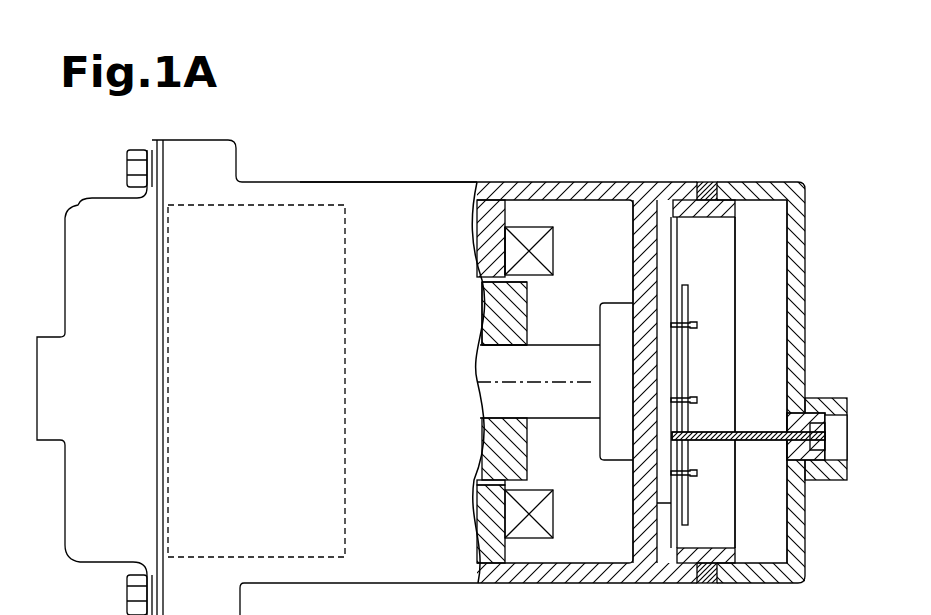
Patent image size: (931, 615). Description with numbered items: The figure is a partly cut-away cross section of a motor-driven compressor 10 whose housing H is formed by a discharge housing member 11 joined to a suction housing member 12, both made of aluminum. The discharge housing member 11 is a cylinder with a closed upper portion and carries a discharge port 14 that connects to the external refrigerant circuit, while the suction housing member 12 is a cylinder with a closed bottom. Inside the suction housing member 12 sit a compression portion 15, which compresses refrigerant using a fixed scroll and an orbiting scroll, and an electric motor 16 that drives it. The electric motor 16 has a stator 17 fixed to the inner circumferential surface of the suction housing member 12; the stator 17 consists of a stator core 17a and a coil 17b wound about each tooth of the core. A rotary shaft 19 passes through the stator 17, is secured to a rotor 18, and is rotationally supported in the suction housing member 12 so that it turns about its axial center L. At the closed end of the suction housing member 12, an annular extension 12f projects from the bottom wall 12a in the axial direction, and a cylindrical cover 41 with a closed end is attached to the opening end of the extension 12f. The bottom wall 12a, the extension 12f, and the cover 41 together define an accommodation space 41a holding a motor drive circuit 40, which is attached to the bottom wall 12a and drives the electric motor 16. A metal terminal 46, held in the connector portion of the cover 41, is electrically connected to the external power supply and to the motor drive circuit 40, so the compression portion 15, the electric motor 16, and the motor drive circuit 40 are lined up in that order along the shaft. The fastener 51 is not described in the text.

The motor-driven compressor 10 is at (149, 137).
The discharge housing member 11 is at (93, 197).
The suction housing member 12 is at (365, 181).
The housing H is at (430, 181).
The bottom wall 12a is at (635, 265).
The annular extension 12f is at (678, 188).
The discharge port 14 is at (44, 340).
The compression portion 15 is at (258, 202).
The electric motor 16 is at (515, 216).
The stator 17 is at (410, 253).
The stator core 17a is at (485, 268).
The coil 17b is at (513, 252).
The rotor 18 is at (527, 462).
The rotary shaft 19 is at (558, 354).
The axial center L is at (517, 383).
The motor drive circuit 40 is at (689, 307).
The cover 41 is at (784, 183).
The accommodation space 41a is at (782, 351).
The metal terminal 46 is at (762, 441).
The fastening screw 51 is at (708, 187).